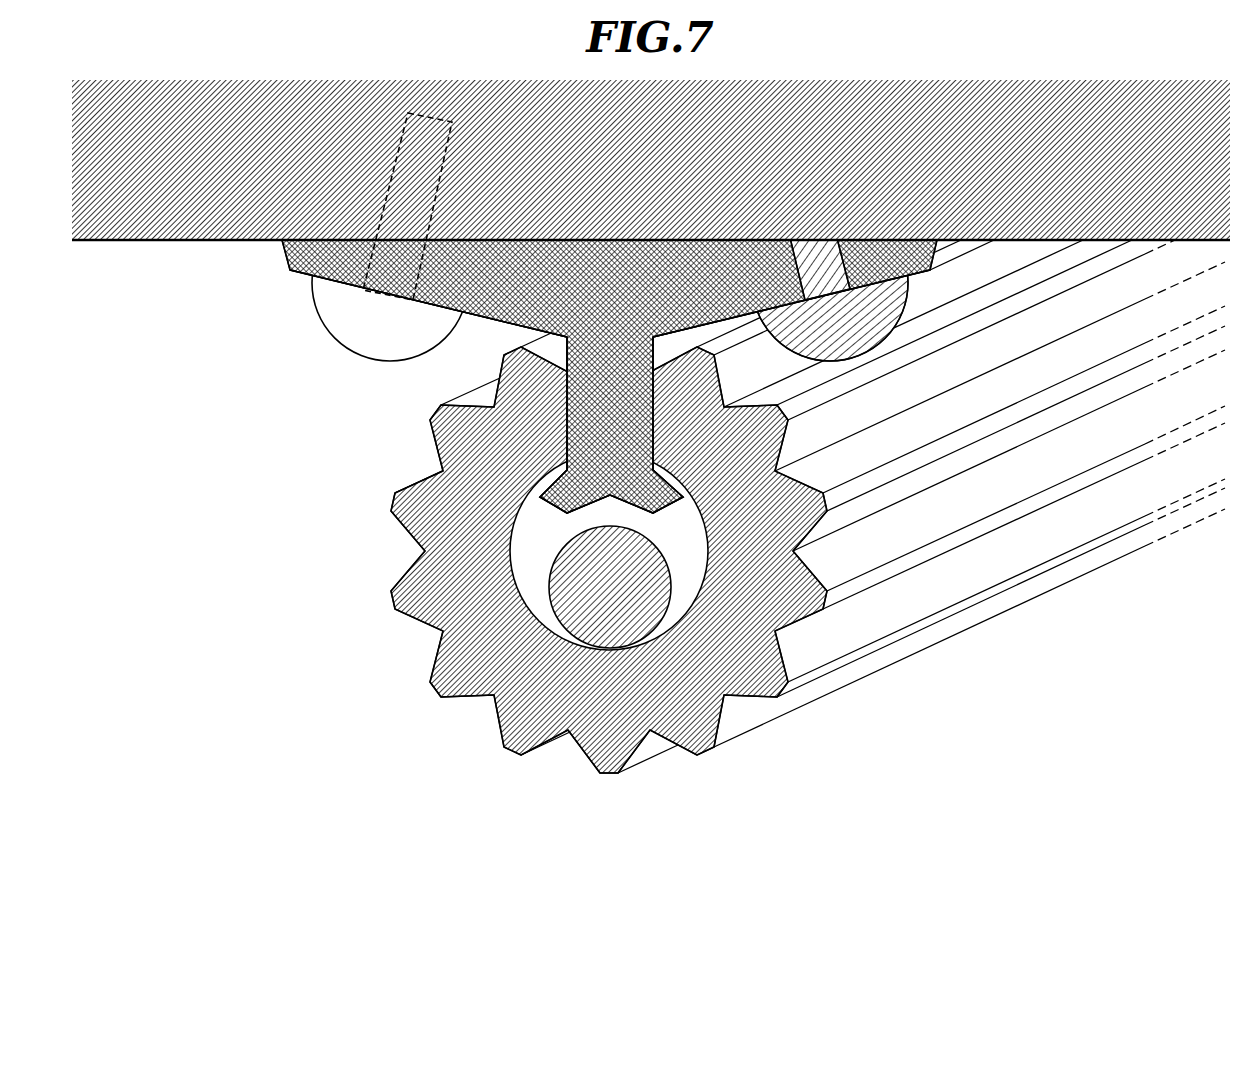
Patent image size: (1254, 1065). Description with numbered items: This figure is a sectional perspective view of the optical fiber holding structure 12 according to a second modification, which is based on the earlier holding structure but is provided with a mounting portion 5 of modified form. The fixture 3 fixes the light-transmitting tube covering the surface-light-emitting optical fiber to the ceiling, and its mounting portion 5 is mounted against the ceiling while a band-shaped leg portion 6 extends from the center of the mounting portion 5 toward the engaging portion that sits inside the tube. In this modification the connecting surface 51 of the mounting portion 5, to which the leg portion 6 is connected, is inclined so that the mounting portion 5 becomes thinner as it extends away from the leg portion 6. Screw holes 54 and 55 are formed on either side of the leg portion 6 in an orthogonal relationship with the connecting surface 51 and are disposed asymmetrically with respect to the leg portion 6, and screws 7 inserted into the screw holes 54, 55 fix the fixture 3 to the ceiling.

The fixture 3 is at (282, 258).
The mounting portion 5 is at (611, 262).
The leg portion 6 is at (592, 376).
The screws 7 is at (372, 340).
The optical fiber holding structure 12 is at (295, 513).
The connecting surface 51 is at (500, 322).
The screw hole 54 is at (786, 261).
The screw hole 55 is at (428, 206).